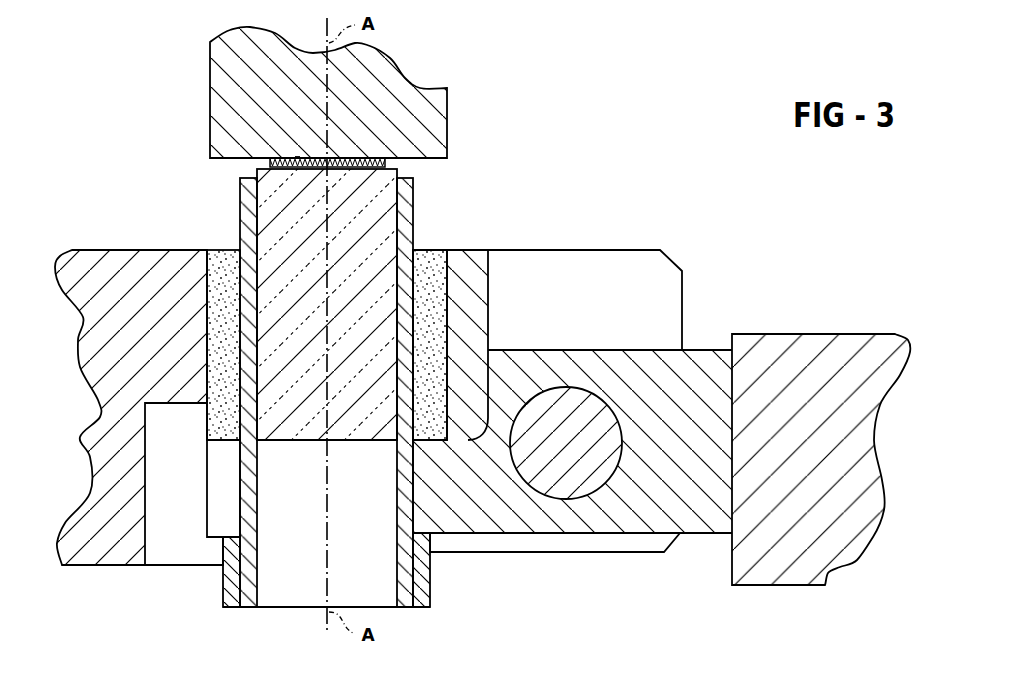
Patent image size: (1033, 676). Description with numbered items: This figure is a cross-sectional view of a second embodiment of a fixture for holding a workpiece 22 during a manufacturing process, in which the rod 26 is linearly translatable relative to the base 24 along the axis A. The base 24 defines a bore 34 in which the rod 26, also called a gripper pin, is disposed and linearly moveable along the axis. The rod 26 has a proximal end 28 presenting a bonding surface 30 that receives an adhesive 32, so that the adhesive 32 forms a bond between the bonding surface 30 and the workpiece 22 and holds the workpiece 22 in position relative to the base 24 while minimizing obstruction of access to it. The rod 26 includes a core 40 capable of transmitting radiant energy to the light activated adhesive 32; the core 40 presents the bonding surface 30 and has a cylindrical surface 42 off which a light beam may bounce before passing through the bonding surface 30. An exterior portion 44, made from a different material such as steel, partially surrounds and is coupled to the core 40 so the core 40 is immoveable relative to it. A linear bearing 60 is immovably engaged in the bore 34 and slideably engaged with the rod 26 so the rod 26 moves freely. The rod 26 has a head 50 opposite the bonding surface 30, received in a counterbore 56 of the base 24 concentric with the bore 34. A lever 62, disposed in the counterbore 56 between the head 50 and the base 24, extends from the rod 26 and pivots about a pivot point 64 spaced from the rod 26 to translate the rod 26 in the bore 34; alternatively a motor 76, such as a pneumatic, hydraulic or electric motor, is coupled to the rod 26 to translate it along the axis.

The workpiece 22 is at (435, 112).
The base 24 is at (108, 272).
The rod 26 is at (380, 183).
The proximal end 28 is at (257, 171).
The bonding surface 30 is at (350, 167).
The adhesive 32 is at (297, 158).
The bore 34 is at (207, 333).
The core 40 is at (312, 389).
The cylindrical surface 42 is at (277, 393).
The exterior portion 44 is at (253, 305).
The head 50 is at (421, 585).
The counterbore 56 is at (160, 445).
The linear bearing 60 is at (427, 267).
The lever 62 is at (702, 370).
The pivot point 64 is at (567, 470).
The motor 76 is at (797, 577).